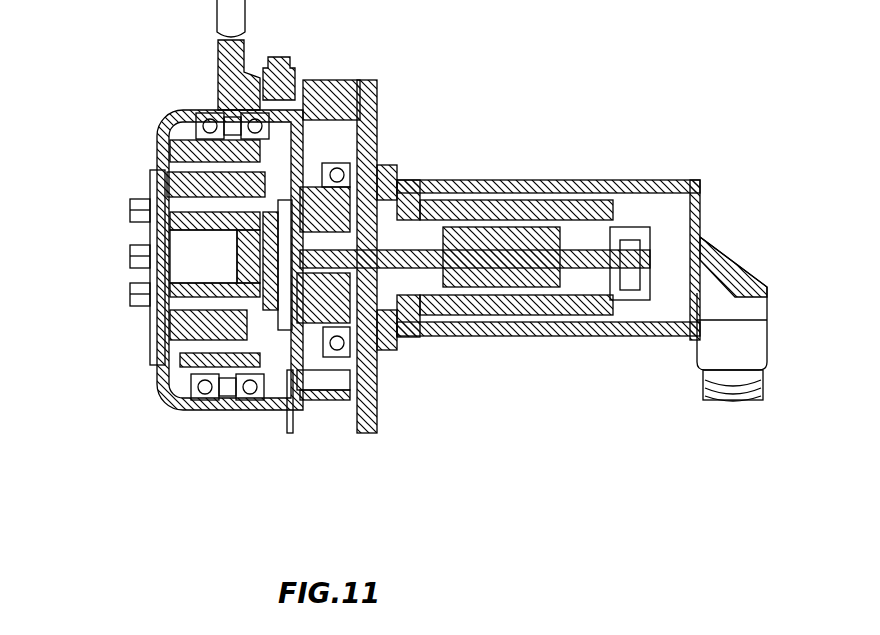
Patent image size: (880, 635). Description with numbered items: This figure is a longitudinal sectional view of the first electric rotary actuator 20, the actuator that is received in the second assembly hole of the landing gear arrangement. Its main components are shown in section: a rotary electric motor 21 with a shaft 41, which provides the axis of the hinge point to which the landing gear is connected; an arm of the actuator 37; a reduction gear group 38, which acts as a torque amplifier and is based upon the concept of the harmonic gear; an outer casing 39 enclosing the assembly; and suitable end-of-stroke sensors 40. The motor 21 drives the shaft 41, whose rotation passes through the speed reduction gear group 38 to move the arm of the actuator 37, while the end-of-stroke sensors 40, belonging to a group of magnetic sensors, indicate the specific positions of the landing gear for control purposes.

The first electric rotary actuator 20 is at (293, 453).
The electric motor 21 is at (507, 227).
The arm of the actuator 37 is at (172, 112).
The reduction gear group 38 is at (387, 107).
The outer casing 39 is at (307, 400).
The end-of-stroke sensors 40 is at (157, 163).
The shaft 41 is at (400, 245).